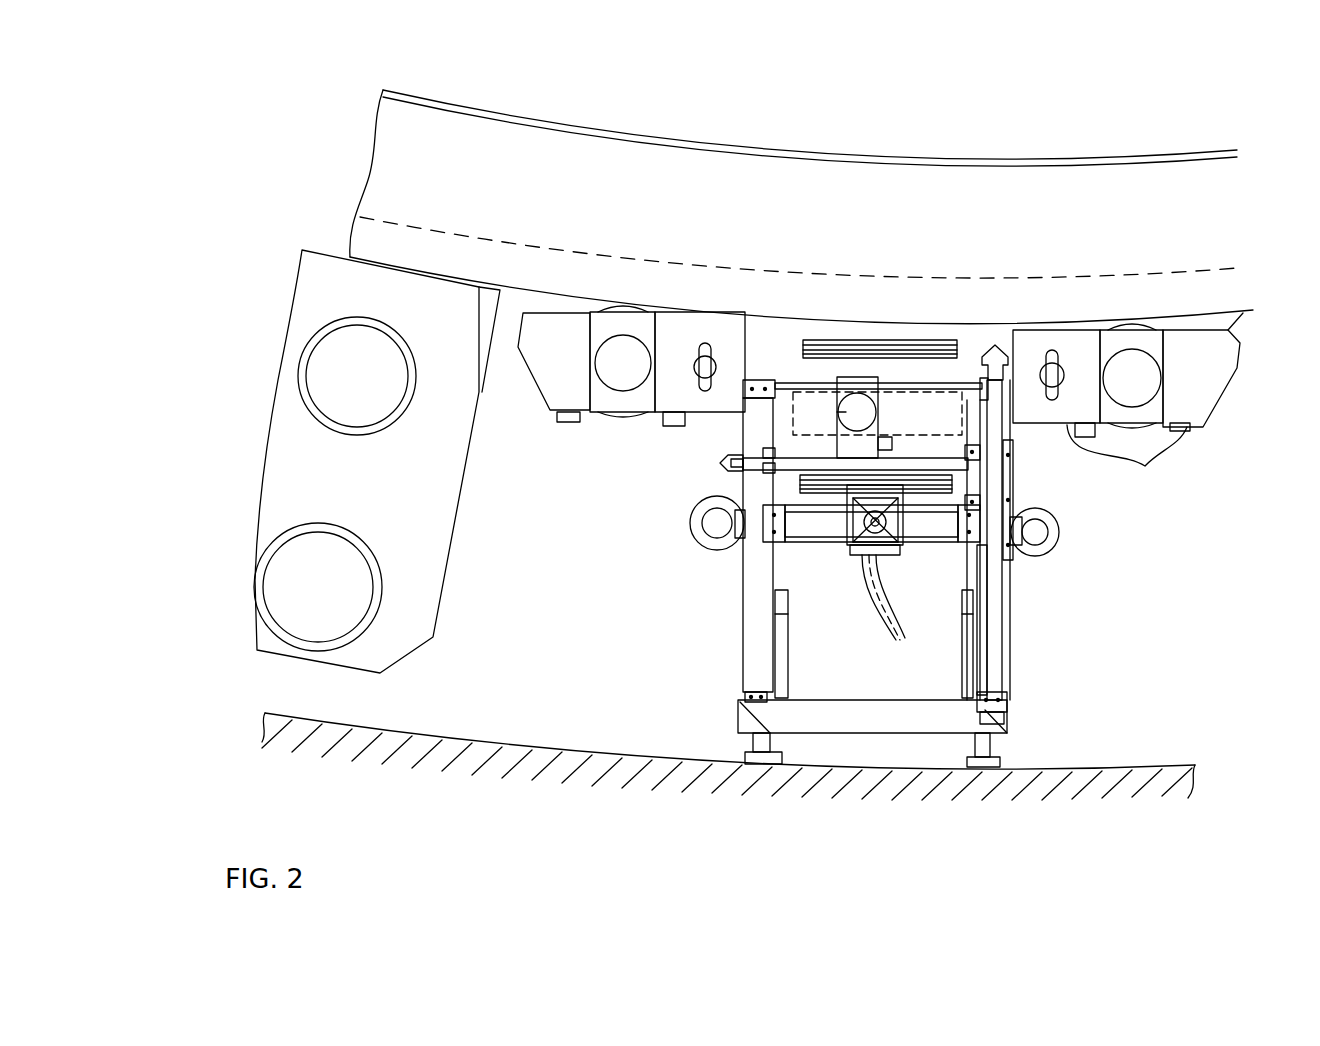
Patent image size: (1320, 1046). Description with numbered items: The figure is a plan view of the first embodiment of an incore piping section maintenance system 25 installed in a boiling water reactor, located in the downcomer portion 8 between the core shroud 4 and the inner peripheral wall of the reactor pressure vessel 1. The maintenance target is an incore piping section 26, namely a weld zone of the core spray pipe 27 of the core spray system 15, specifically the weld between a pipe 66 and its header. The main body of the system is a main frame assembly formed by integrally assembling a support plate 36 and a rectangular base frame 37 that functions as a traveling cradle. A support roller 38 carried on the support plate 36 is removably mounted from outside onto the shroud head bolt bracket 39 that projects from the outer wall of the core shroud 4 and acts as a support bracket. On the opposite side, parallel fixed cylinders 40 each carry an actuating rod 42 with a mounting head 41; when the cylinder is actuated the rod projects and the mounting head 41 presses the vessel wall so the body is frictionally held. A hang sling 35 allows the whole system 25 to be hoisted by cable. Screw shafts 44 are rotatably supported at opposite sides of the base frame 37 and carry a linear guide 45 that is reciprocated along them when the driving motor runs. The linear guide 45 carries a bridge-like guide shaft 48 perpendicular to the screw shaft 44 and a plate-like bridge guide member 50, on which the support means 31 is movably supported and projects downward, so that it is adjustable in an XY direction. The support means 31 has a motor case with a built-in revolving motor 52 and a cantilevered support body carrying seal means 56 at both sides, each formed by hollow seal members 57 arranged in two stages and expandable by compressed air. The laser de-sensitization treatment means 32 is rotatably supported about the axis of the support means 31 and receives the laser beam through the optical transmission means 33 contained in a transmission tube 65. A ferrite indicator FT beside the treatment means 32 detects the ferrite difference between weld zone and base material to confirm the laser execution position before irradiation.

The reactor pressure vessel 1 is at (480, 740).
The core shroud 4 is at (555, 130).
The downcomer portion 8 is at (545, 588).
The core spray system 15 is at (903, 155).
The incore piping section maintenance system 25 is at (990, 325).
The incore piping section 26 is at (808, 438).
The core spray pipe 27 is at (770, 347).
The support means 31 is at (913, 523).
The laser de-sensitization treatment means 32 is at (857, 392).
The optical transmission means 33 is at (893, 615).
The hang sling 35 is at (693, 533).
The support plate 36 is at (545, 385).
The base frame 37 is at (850, 737).
The support roller 38 is at (625, 312).
The shroud head bolt bracket 39 is at (663, 432).
The fixed cylinder 40 is at (778, 660).
The mounting head 41 is at (743, 765).
The actuating rod 42 is at (750, 742).
The screw shaft 44 is at (995, 470).
The linear guide 45 is at (1005, 545).
The guide shaft 48 is at (975, 443).
The bridge guide member 50 is at (802, 527).
The revolving motor 52 is at (880, 535).
The seal means 56 is at (930, 337).
The seal member 57 is at (880, 340).
The transmission tube 65 is at (870, 603).
The pipe 66 is at (775, 423).
The ferrite indicator FT is at (812, 440).